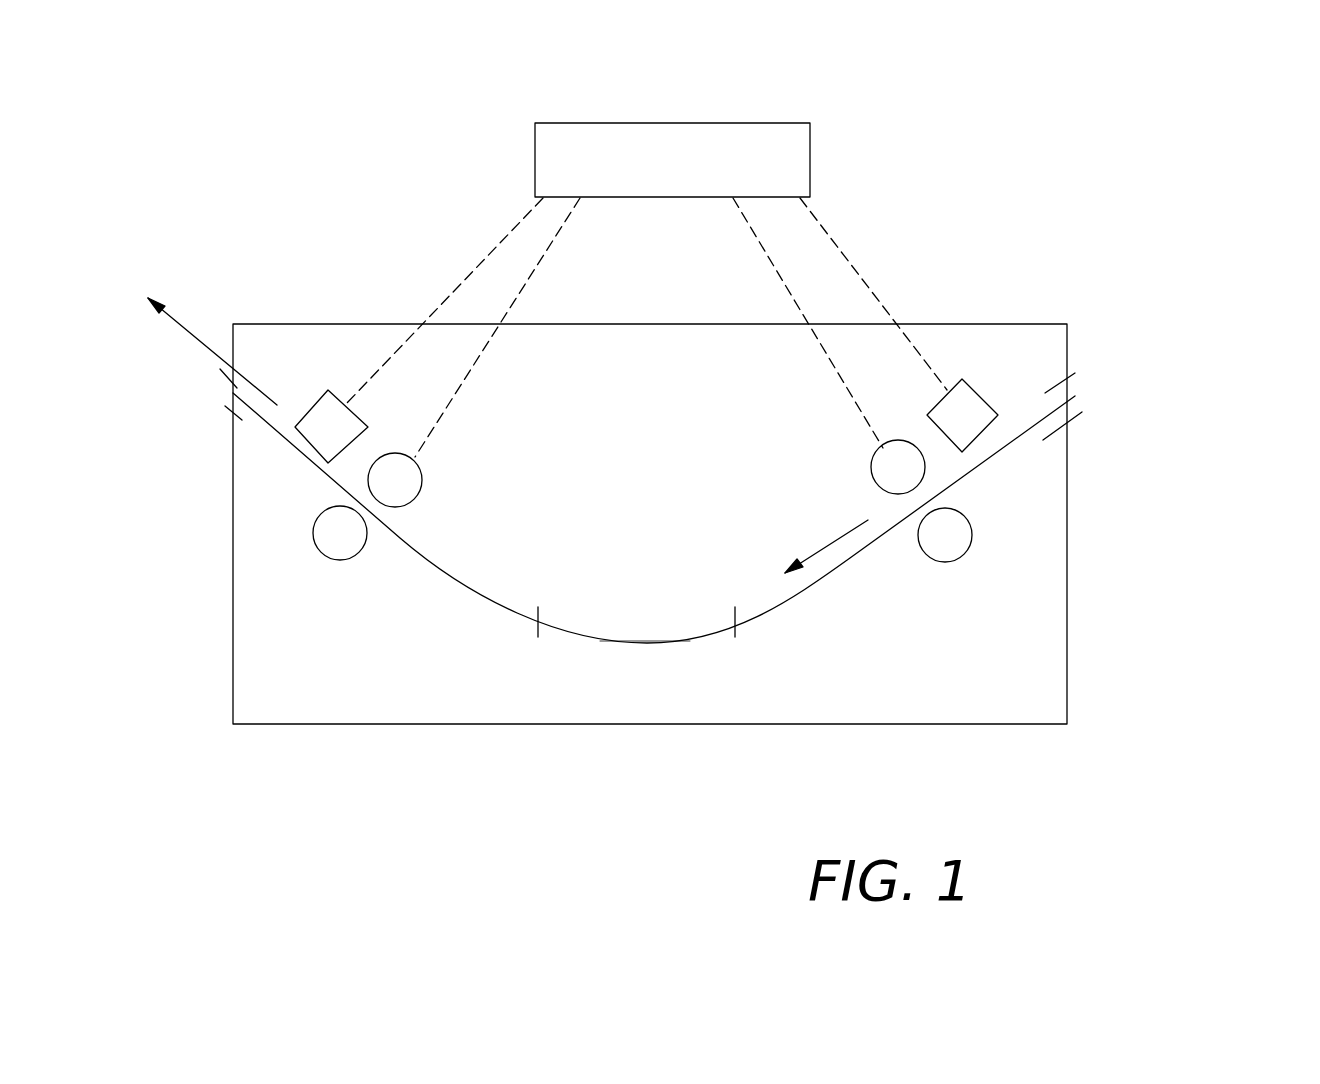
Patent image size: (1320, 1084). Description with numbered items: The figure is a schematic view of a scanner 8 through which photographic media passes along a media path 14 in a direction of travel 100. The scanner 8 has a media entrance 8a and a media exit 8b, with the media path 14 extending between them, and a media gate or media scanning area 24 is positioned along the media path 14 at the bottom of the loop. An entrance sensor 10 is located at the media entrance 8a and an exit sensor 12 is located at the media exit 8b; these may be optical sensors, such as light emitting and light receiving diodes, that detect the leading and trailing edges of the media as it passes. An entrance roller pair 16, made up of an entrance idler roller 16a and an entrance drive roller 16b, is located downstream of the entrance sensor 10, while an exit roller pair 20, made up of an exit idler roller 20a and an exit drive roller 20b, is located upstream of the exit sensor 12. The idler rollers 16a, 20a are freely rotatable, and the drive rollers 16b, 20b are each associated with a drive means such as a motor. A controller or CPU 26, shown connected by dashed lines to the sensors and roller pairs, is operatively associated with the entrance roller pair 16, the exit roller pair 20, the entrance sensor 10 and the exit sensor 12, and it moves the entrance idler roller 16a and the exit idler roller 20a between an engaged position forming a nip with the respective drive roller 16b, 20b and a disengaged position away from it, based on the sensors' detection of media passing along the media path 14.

The scanner 8 is at (1115, 447).
The media entrance 8a is at (1073, 383).
The media exit 8b is at (223, 392).
The entrance sensor 10 is at (973, 397).
The exit sensor 12 is at (326, 403).
The media path 14 is at (788, 598).
The entrance roller pair 16 is at (957, 522).
The entrance idler roller 16a is at (882, 470).
The entrance drive roller 16b is at (952, 545).
The exit roller pair 20 is at (395, 616).
The exit idler roller 20a is at (423, 480).
The exit drive roller 20b is at (318, 538).
The media gate or media scanning area 24 is at (637, 643).
The controller or CPU 26 is at (810, 160).
The direction of travel 100 is at (186, 330).